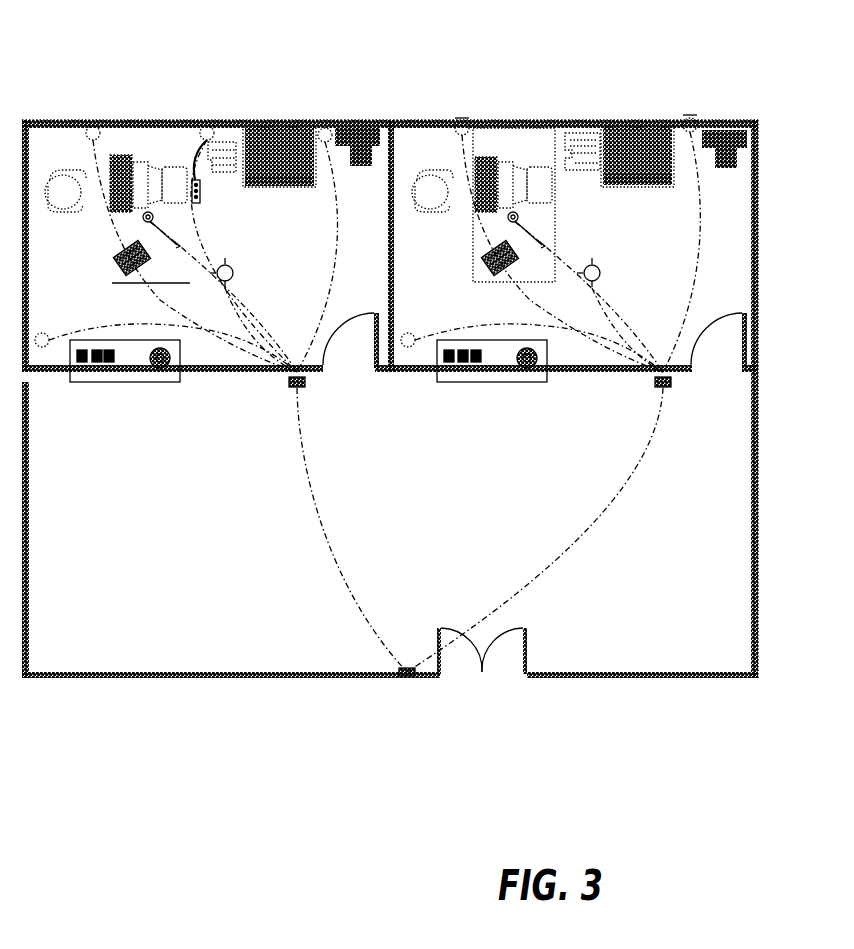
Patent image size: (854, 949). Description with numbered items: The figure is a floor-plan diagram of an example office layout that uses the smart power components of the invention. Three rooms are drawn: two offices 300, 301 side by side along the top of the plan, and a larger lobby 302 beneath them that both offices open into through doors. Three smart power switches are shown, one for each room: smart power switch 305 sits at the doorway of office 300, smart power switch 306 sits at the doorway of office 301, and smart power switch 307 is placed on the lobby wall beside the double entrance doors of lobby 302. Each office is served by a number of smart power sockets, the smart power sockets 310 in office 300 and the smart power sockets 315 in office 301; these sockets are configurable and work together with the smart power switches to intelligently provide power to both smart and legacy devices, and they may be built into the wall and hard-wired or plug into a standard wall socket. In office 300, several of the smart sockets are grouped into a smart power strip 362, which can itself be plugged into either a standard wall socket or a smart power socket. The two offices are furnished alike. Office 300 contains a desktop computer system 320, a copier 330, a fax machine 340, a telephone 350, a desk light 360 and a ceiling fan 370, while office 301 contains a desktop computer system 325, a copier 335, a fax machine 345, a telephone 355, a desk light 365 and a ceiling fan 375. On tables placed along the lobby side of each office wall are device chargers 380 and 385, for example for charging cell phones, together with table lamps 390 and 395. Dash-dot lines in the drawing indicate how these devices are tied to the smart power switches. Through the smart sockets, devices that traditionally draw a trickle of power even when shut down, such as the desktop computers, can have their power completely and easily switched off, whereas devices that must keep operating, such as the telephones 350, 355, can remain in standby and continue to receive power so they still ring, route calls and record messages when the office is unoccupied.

The office 300 is at (208, 246).
The office 301 is at (572, 246).
The lobby 302 is at (390, 522).
The smart power switch 305 is at (297, 388).
The smart power switch 306 is at (663, 388).
The smart power switch 307 is at (407, 678).
The smart power sockets 310 is at (100, 126).
The smart power sockets 315 is at (462, 118).
The desktop computer system 320 is at (145, 168).
The desktop computer system 325 is at (510, 168).
The copier 330 is at (270, 130).
The copier 335 is at (635, 130).
The fax machine 340 is at (355, 130).
The fax machine 345 is at (725, 132).
The telephone 350 is at (116, 272).
The telephone 355 is at (484, 272).
The desk light 360 is at (180, 245).
The smart power strip 362 is at (202, 200).
The desk light 365 is at (546, 245).
The ceiling fan 370 is at (233, 273).
The ceiling fan 375 is at (600, 273).
The device chargers 380 is at (82, 362).
The device chargers 385 is at (449, 362).
The table lamp 390 is at (162, 368).
The table lamp 395 is at (529, 368).